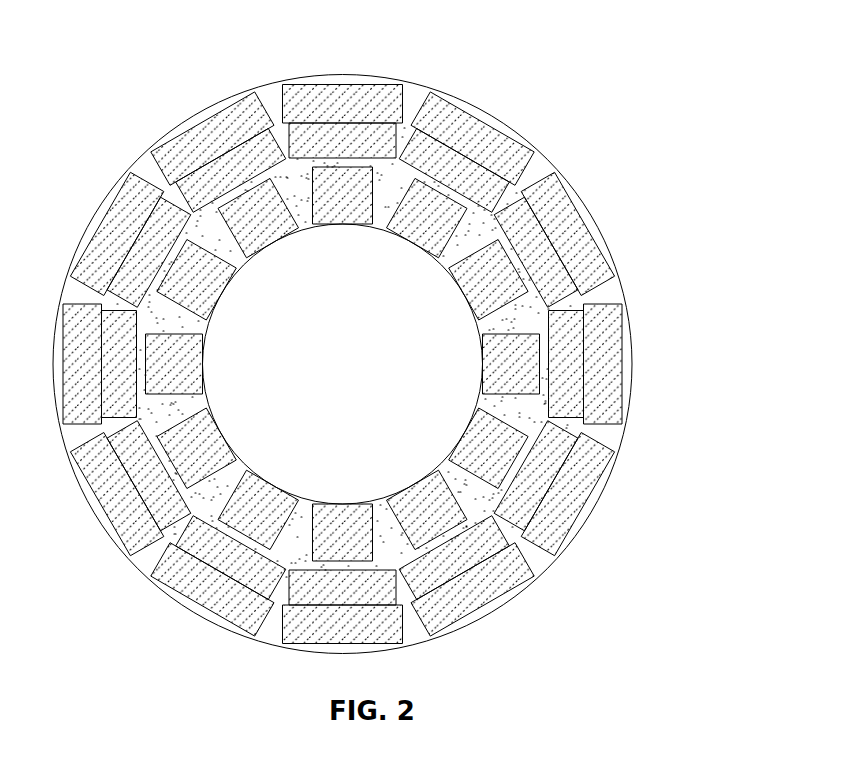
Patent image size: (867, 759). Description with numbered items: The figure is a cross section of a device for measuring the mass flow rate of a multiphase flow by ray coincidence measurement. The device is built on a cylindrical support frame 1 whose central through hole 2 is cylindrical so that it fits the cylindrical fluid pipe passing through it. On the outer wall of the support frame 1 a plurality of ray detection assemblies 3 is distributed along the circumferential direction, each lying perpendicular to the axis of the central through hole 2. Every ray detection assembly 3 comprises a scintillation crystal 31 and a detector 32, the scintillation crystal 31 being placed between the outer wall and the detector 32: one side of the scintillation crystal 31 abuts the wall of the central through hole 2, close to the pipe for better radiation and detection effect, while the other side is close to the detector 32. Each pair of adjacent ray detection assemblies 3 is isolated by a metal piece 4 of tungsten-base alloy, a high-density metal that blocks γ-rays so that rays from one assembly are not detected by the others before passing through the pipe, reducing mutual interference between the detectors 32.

The support frame 1 is at (513, 133).
The central through hole 2 is at (358, 270).
The ray detection assembly 3 is at (570, 234).
The scintillation crystal 31 is at (505, 257).
The detector 32 is at (548, 248).
The metal piece 4 is at (515, 323).